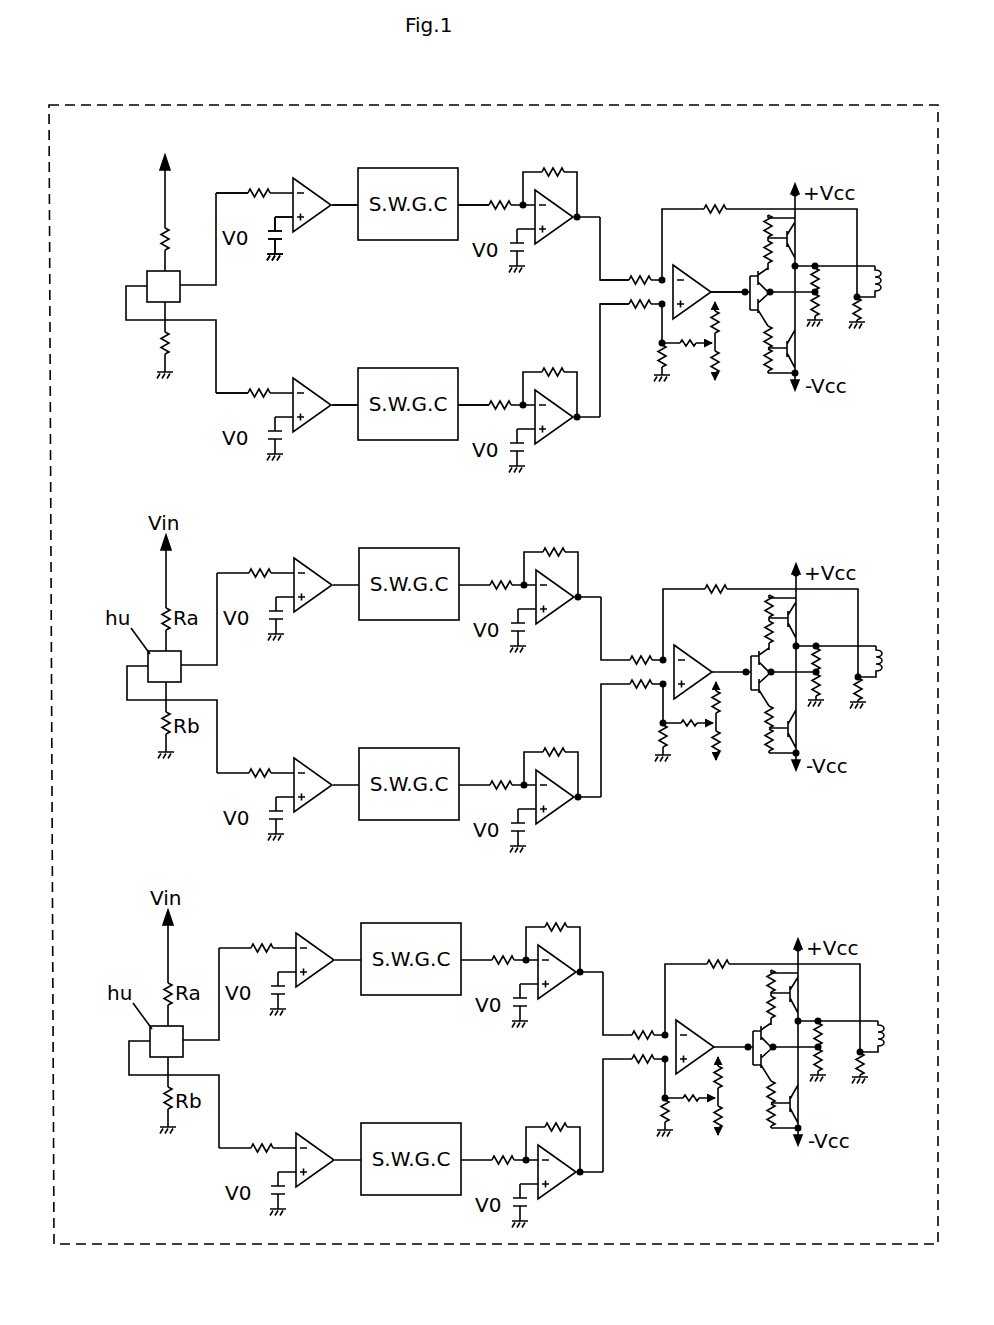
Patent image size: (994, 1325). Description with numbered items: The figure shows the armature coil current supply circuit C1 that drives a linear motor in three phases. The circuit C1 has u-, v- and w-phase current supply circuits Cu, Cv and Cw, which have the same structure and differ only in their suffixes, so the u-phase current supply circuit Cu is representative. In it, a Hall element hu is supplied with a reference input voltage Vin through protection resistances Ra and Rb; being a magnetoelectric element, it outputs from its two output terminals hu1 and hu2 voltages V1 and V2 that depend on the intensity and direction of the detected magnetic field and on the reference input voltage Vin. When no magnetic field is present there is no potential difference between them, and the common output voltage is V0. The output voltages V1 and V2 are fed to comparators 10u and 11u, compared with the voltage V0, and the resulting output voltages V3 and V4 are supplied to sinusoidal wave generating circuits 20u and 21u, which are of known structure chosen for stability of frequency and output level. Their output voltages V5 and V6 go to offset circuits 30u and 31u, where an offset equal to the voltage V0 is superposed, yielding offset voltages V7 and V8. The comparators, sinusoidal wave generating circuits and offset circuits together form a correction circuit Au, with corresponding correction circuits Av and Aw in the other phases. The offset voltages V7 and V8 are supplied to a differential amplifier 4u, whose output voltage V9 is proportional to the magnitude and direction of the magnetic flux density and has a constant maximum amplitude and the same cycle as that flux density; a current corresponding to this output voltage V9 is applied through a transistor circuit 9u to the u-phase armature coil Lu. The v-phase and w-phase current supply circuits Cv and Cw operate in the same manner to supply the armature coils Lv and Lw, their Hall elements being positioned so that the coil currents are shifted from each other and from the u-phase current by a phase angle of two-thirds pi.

The armature coil current supply circuit C1 is at (722, 103).
The u-phase current supply circuit Cu is at (108, 178).
The v-phase current supply circuit Cv is at (486, 671).
The w-phase current supply circuit Cw is at (490, 1046).
The correction circuit Au is at (602, 148).
The correction circuit Av is at (407, 671).
The correction circuit Aw is at (409, 1046).
The Hall element hu is at (149, 274).
The output terminal hu1 is at (188, 288).
The output terminal hu2 is at (141, 287).
The protection resistance Ra is at (179, 248).
The protection resistance Rb is at (178, 340).
The reference input voltage Vin is at (162, 179).
The output voltage with no magnetic field V0 is at (257, 239).
The output voltage V1 is at (230, 178).
The output voltage V2 is at (232, 377).
The output voltage V3 is at (339, 189).
The output voltage V4 is at (339, 389).
The output voltage V5 is at (473, 189).
The output voltage V6 is at (473, 389).
The offset voltage V7 is at (615, 268).
The offset voltage V8 is at (615, 320).
The output voltage V9 is at (729, 281).
The comparator 10u is at (315, 240).
The comparator 11u is at (313, 372).
The sinusoidal wave generating circuit 20u is at (417, 248).
The sinusoidal wave generating circuit 21u is at (423, 366).
The offset circuit 30u is at (557, 256).
The offset circuit 31u is at (553, 364).
The differential amplifier 4u is at (655, 225).
The transistor circuit 9u is at (866, 187).
The u-phase armature coil Lu is at (882, 271).
The v-phase armature coil Lv is at (883, 640).
The w-phase armature coil Lw is at (888, 1015).